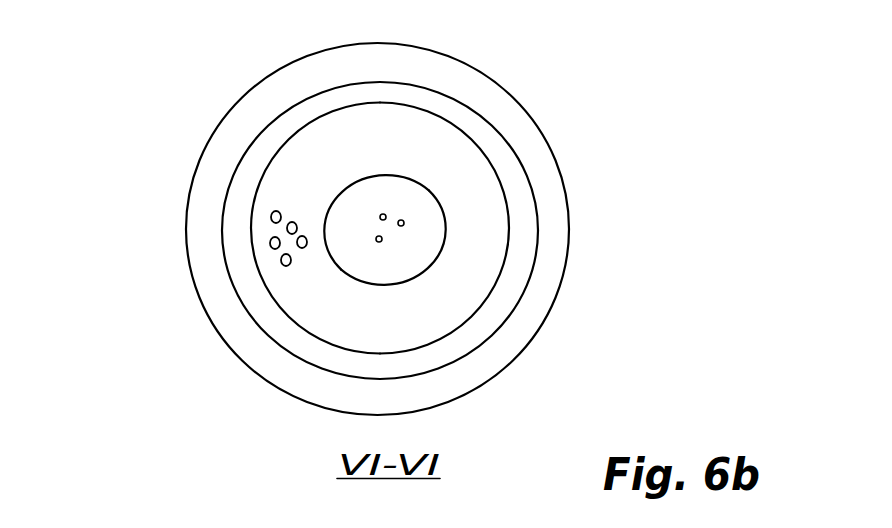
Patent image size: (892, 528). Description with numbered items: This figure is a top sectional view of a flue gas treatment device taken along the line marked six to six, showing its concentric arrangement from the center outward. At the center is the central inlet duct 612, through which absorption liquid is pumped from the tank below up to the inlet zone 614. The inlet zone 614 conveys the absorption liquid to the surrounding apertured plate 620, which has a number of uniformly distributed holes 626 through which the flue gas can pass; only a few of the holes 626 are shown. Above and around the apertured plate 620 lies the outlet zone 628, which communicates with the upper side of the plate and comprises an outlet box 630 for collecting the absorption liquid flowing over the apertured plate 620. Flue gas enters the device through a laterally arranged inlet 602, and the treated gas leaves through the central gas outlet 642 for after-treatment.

The inlet 602 is at (197, 297).
The central gas outlet 642 is at (538, 262).
The outlet zone 628 is at (522, 193).
The outlet box 630 is at (493, 152).
The apertured plate 620 is at (277, 187).
The inlet zone 614 is at (358, 205).
The central inlet duct 612 is at (428, 267).
The holes 626 is at (270, 217).